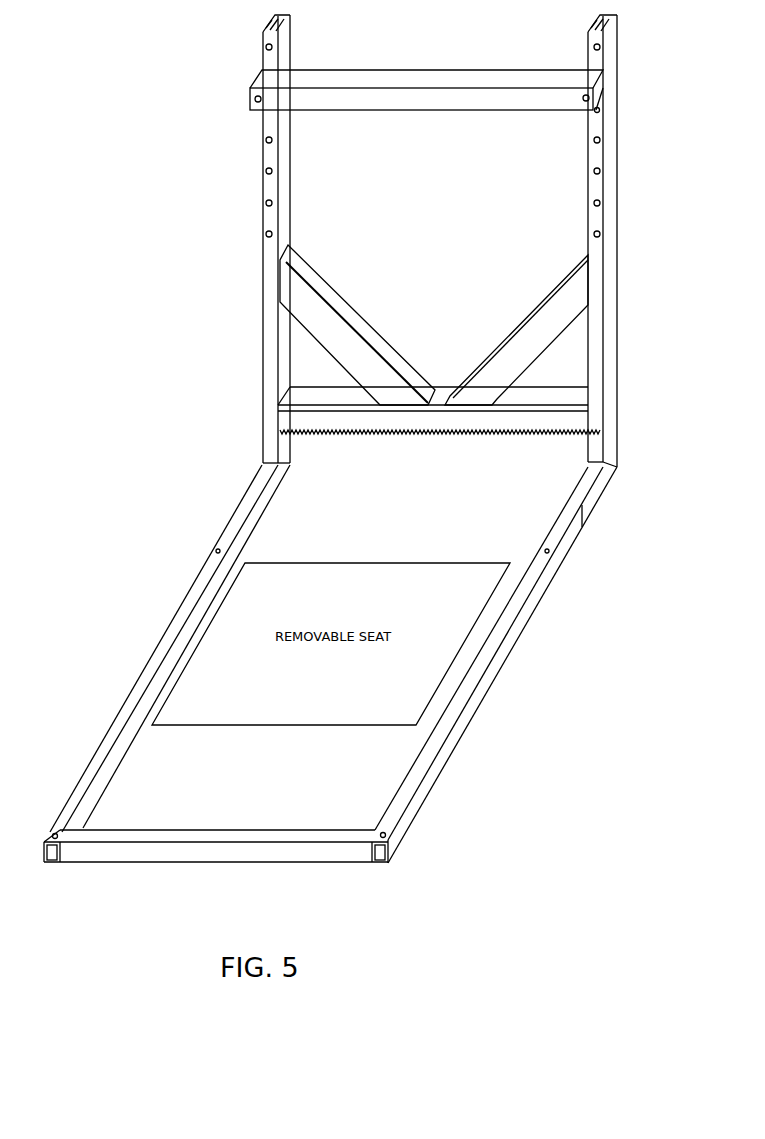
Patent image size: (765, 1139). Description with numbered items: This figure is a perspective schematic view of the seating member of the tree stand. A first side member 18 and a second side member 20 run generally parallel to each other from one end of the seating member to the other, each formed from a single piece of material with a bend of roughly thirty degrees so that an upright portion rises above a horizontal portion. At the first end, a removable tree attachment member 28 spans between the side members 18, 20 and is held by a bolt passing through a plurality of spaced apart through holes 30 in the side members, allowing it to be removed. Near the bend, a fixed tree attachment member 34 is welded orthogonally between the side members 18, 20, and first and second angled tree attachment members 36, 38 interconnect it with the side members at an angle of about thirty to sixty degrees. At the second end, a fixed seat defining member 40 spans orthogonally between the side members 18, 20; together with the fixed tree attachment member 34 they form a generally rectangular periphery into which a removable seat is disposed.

The first side member 18 is at (538, 588).
The second side member 20 is at (172, 622).
The removable tree attachment member 28 is at (483, 100).
The through holes 30 is at (601, 141).
The fixed tree attachment member 34 is at (362, 427).
The first angled tree attachment member 36 is at (360, 330).
The second angled tree attachment member 38 is at (523, 350).
The fixed seat defining member 40 is at (200, 853).